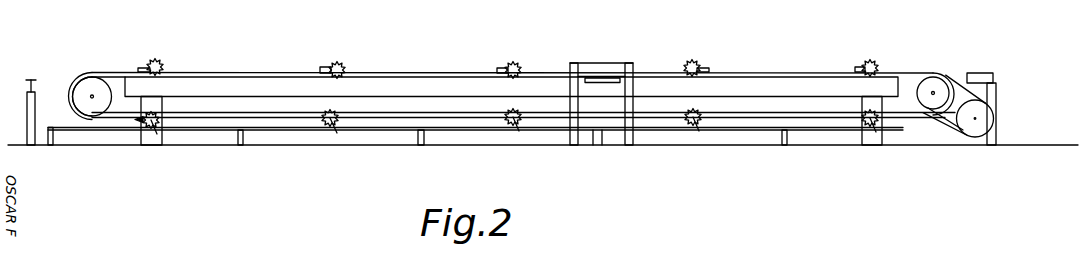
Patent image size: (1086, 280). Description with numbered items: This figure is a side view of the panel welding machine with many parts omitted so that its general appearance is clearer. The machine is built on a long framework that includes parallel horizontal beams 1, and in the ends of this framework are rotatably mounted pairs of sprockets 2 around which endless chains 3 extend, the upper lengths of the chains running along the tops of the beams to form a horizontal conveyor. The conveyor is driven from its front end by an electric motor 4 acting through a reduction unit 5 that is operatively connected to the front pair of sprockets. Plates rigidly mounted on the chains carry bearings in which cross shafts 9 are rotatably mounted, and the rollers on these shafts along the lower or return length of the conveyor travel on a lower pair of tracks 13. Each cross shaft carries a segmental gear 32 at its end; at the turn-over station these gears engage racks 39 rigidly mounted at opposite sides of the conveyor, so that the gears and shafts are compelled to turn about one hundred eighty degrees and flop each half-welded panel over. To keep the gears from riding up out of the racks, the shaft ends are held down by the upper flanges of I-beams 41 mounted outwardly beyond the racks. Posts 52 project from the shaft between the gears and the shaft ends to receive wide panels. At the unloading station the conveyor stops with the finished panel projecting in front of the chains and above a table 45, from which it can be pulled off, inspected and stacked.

The horizontal beams 1 is at (380, 86).
The sprockets 2 is at (83, 90).
The endless chains 3 is at (437, 73).
The electric motor 4 is at (975, 130).
The reduction unit 5 is at (948, 110).
The cross shaft 9 is at (150, 64).
The lower pair of tracks 13 is at (443, 130).
The segmental gear 32 is at (518, 64).
The racks 39 is at (612, 78).
The I-beams 41 is at (596, 62).
The table 45 is at (982, 73).
The posts 52 is at (320, 69).